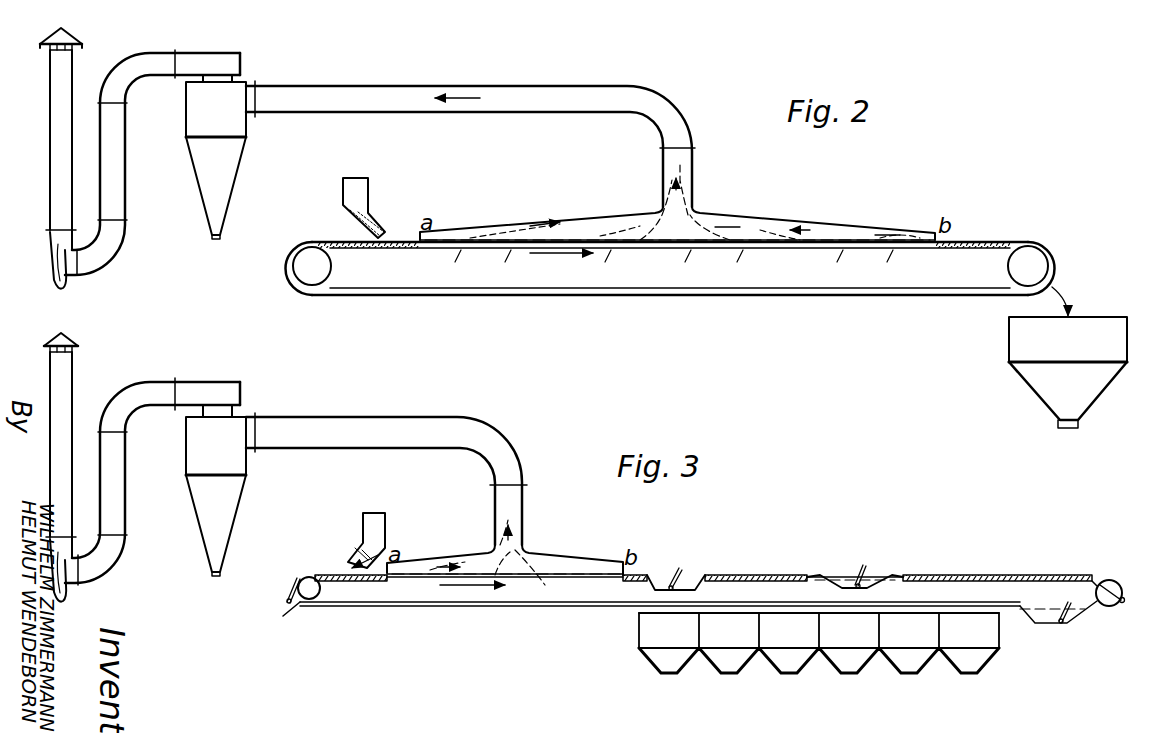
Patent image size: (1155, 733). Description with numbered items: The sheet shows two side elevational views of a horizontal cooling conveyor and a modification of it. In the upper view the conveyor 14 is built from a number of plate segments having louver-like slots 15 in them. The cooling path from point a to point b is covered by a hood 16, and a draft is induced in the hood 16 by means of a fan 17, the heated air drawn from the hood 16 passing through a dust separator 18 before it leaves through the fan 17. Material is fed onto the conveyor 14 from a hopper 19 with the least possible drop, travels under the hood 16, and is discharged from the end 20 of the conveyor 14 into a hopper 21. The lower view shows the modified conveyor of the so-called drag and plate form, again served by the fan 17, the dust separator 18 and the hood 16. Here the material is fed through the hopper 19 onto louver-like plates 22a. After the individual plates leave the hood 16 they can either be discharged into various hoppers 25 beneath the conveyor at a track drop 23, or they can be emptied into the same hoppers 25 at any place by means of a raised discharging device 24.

In FIG. 2, the conveyor 14 is at (345, 290).
In FIG. 2, the louver-like slots 15 is at (415, 248).
In FIG. 2, the hood 16 is at (700, 218).
In FIG. 3, the hood 16 is at (497, 548).
In FIG. 2, the fan 17 is at (66, 285).
In FIG. 3, the fan 17 is at (66, 598).
In FIG. 2, the dust separator 18 is at (197, 120).
In FIG. 3, the dust separator 18 is at (197, 453).
In FIG. 2, the hopper 19 is at (362, 192).
In FIG. 3, the hopper 19 is at (380, 526).
In FIG. 2, the end 20 is at (1036, 266).
In FIG. 2, the hopper 21 is at (1018, 338).
In FIG. 3, the louver-like plates 22a is at (704, 599).
In FIG. 3, the track drop 23 is at (680, 570).
In FIG. 3, the raised discharging device 24 is at (892, 574).
In FIG. 3, the hoppers 25 is at (652, 628).